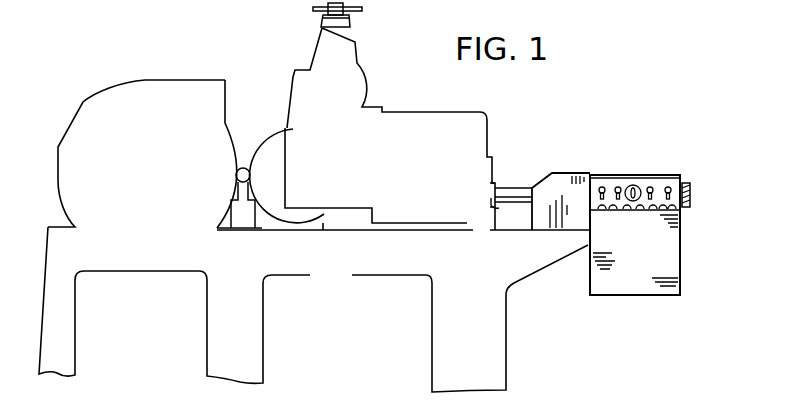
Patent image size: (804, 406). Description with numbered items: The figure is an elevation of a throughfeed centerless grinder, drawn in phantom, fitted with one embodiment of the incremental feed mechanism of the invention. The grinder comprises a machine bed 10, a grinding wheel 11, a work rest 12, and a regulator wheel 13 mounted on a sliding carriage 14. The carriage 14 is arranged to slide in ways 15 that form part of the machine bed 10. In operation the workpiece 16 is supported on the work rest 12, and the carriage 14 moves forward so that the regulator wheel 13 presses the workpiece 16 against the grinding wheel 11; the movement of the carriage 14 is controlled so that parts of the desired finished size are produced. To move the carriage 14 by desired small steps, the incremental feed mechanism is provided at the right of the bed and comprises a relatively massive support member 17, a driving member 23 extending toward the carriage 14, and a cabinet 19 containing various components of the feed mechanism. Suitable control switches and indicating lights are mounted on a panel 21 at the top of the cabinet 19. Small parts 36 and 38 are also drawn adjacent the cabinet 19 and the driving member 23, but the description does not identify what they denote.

The machine bed 10 is at (317, 268).
The grinding wheel 11 is at (228, 124).
The work rest 12 is at (237, 210).
The regulator wheel 13 is at (275, 131).
The sliding carriage 14 is at (404, 117).
The ways 15 is at (355, 226).
The workpiece 16 is at (241, 168).
The support member 17 is at (560, 180).
The cabinet 19 is at (673, 258).
The panel 21 is at (648, 160).
The driving member 23 is at (528, 190).
The connector 36 is at (690, 186).
The clamp 38 is at (493, 203).